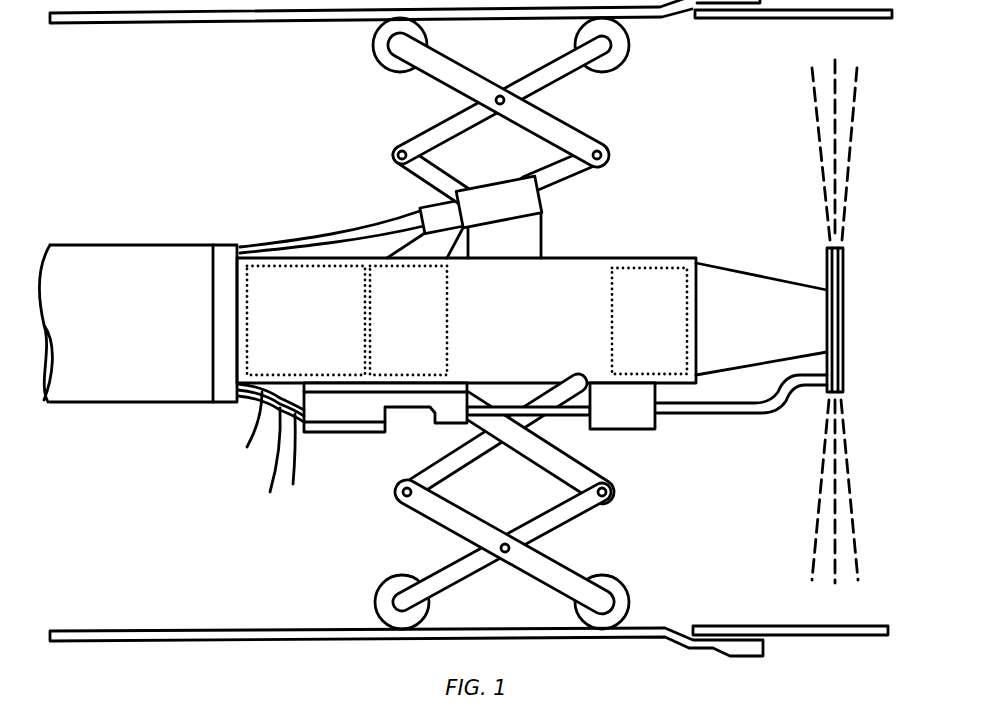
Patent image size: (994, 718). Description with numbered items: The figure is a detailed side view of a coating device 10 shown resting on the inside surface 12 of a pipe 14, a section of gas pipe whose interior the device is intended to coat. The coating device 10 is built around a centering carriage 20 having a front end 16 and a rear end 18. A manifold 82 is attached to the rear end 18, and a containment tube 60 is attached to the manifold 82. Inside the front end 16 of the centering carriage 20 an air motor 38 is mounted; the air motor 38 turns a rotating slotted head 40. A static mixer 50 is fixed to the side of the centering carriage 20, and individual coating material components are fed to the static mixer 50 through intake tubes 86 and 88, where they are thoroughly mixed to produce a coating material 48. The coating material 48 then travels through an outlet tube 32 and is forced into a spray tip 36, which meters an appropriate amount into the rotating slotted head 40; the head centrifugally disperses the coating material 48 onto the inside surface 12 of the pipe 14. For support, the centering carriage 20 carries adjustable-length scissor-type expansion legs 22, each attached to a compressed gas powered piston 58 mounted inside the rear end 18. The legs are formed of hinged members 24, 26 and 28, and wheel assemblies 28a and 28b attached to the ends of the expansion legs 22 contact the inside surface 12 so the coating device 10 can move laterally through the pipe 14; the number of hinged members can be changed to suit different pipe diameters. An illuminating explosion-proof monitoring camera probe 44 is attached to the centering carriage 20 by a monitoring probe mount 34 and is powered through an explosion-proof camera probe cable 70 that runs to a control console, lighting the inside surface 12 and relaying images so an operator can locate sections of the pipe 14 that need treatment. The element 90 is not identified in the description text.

The coating device 10 is at (196, 126).
The inside surface 12 is at (255, 622).
The pipe 14 is at (227, 623).
The front end 16 is at (703, 243).
The rear end 18 is at (260, 234).
The centering carriage 20 is at (250, 440).
The adjustable-length scissor-type expansion legs 22 is at (436, 549).
The hinged member 24 is at (430, 85).
The hinged member 26 is at (530, 62).
The hinged member 28 is at (420, 183).
The wheel assembly 28a is at (375, 40).
The wheel assembly 28b is at (599, 75).
The outlet tube 32 is at (573, 415).
The monitoring probe mount 34 is at (560, 245).
The spray tip 36 is at (720, 414).
The air motor 38 is at (612, 352).
The rotating slotted head 40 is at (843, 300).
The illuminating explosion-proof monitoring camera probe 44 is at (558, 184).
The coating material 48 is at (808, 151).
The static mixer 50 is at (372, 432).
The compressed gas powered piston 58 is at (448, 337).
The containment tube 60 is at (117, 243).
The explosion-proof camera probe cable 70 is at (332, 238).
The manifold 82 is at (223, 243).
The intake tube 86 is at (270, 490).
The intake tube 88 is at (287, 462).
The pipe section 90 is at (703, 20).